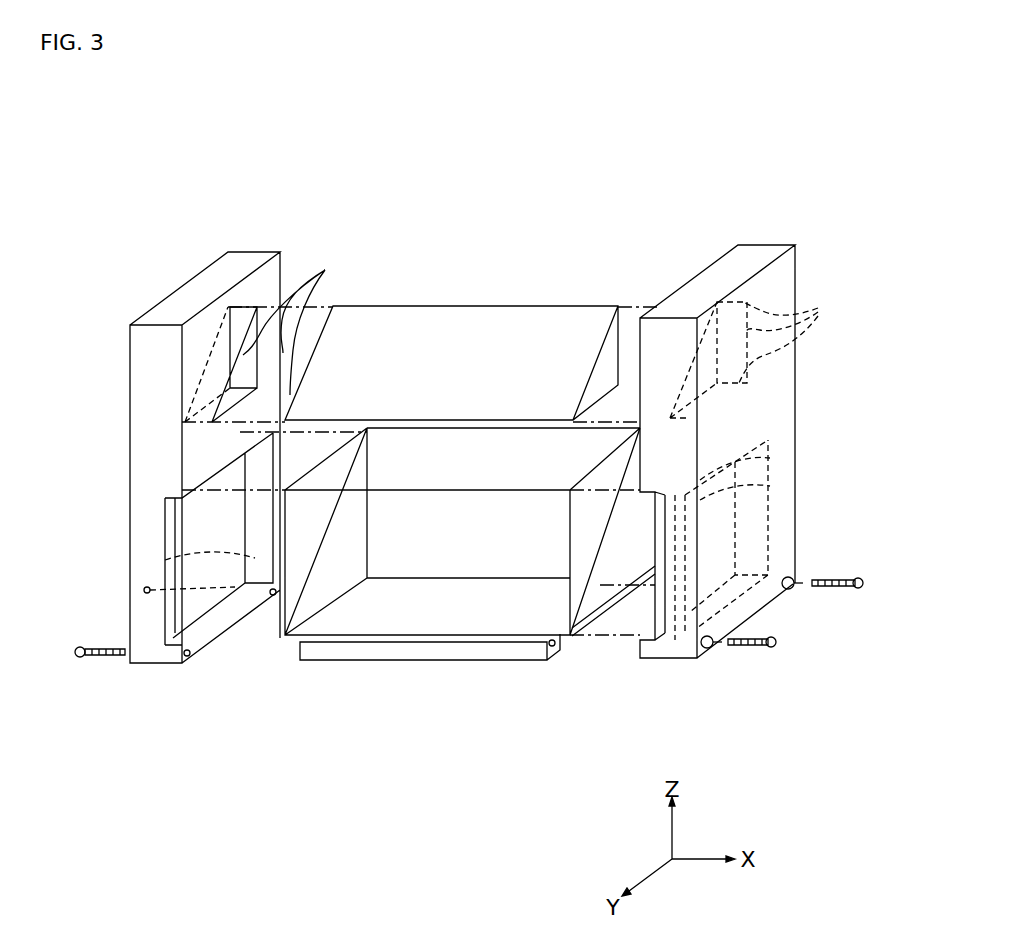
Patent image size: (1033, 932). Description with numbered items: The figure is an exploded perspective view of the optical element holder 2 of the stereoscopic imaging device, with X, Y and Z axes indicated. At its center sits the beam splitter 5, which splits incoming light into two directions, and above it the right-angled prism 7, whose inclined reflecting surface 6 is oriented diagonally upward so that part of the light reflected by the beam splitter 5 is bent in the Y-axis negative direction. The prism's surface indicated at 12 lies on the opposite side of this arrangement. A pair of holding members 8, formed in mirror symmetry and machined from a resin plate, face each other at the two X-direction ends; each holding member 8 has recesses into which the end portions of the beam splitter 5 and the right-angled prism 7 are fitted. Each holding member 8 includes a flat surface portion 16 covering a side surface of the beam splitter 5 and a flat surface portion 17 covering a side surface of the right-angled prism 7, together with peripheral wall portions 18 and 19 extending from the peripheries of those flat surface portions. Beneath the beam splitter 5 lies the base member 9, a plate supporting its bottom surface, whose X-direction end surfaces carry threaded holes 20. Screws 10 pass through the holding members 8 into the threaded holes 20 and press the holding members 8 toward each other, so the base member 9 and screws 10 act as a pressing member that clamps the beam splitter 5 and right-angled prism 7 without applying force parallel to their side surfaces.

The optical element holder 2 is at (180, 250).
The beam splitter 5 is at (398, 616).
The reflecting surface 6 is at (478, 333).
The right-angled prism 7 is at (527, 335).
The holding members 8 is at (232, 262).
The base member 9 is at (368, 650).
The screws 10 is at (82, 660).
The inner surface 12 is at (503, 611).
The flat surface portion 16 is at (203, 581).
The flat surface portion 17 is at (267, 310).
The peripheral wall portion 18 is at (193, 627).
The peripheral wall portion 19 is at (543, 325).
The threaded holes 20 is at (558, 648).